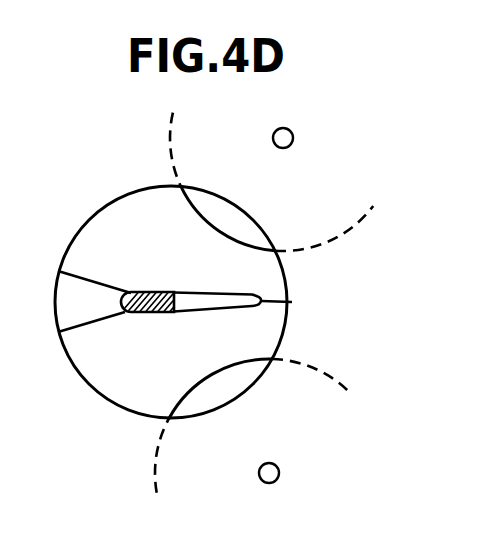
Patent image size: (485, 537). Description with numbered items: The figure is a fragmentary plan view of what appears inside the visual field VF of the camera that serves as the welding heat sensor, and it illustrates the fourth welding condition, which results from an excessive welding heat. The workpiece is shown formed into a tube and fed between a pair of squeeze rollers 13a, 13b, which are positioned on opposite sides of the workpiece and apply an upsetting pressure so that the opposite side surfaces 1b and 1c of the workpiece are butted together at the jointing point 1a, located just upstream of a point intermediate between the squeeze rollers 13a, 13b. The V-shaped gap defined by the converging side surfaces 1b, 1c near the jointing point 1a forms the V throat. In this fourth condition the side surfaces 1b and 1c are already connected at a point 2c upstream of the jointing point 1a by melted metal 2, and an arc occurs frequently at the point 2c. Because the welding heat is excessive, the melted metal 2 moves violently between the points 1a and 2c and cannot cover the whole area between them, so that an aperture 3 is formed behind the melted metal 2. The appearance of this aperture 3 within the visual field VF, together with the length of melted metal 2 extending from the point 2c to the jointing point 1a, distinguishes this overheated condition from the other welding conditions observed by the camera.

The jointing point 1a is at (262, 303).
The opposite side surface 1b is at (83, 282).
The opposite side surface 1c is at (88, 326).
The melted metal 2 is at (147, 291).
The connection point 2c is at (122, 312).
The aperture 3 is at (206, 302).
The squeeze roller 13a is at (169, 142).
The squeeze roller 13b is at (157, 491).
The visual field VF is at (105, 399).